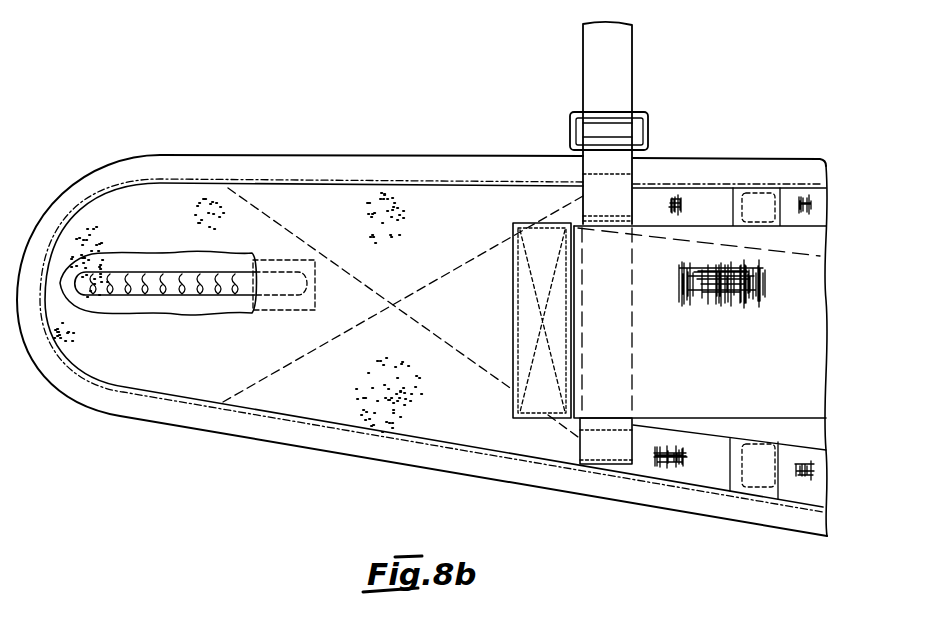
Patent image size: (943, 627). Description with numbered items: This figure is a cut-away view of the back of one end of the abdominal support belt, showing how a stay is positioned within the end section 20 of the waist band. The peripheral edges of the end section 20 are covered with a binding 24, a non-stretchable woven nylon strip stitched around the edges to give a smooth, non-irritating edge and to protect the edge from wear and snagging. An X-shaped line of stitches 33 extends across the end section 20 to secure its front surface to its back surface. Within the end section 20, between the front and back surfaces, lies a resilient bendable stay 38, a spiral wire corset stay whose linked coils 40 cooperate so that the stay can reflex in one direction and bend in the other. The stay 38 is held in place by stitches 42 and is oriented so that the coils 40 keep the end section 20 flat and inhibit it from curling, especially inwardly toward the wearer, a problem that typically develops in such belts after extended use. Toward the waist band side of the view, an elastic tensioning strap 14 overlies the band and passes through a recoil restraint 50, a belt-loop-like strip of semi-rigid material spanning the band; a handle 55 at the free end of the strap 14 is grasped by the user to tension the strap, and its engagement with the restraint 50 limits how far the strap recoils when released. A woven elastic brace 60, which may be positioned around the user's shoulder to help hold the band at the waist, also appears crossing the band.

The end section 20 is at (221, 156).
The binding 24 is at (397, 167).
The linked coils 40 is at (128, 272).
The stay 38 is at (262, 298).
The stitches 42 is at (300, 304).
The X-shaped line of stitches 33 is at (447, 277).
The handle 55 is at (513, 238).
The recoil restraint 50 is at (632, 343).
The tensioning strap 14 is at (783, 238).
The brace 60 is at (627, 65).